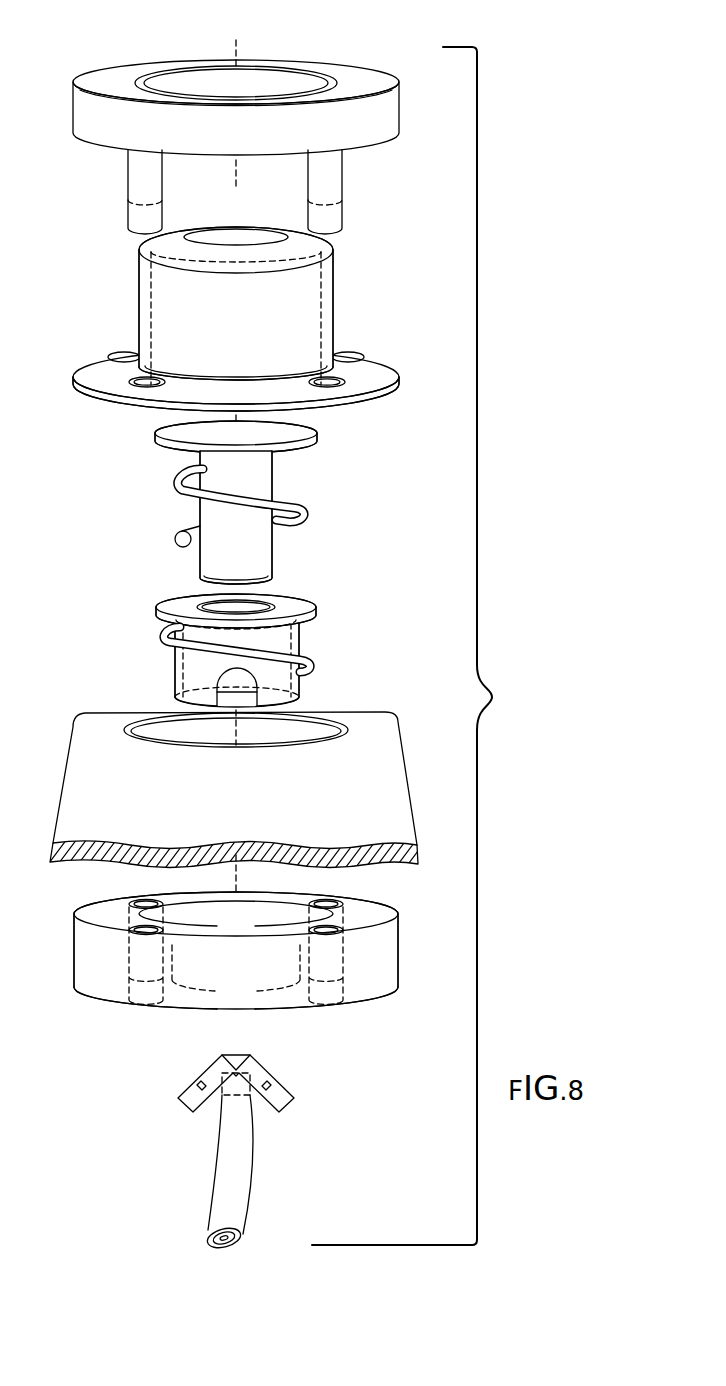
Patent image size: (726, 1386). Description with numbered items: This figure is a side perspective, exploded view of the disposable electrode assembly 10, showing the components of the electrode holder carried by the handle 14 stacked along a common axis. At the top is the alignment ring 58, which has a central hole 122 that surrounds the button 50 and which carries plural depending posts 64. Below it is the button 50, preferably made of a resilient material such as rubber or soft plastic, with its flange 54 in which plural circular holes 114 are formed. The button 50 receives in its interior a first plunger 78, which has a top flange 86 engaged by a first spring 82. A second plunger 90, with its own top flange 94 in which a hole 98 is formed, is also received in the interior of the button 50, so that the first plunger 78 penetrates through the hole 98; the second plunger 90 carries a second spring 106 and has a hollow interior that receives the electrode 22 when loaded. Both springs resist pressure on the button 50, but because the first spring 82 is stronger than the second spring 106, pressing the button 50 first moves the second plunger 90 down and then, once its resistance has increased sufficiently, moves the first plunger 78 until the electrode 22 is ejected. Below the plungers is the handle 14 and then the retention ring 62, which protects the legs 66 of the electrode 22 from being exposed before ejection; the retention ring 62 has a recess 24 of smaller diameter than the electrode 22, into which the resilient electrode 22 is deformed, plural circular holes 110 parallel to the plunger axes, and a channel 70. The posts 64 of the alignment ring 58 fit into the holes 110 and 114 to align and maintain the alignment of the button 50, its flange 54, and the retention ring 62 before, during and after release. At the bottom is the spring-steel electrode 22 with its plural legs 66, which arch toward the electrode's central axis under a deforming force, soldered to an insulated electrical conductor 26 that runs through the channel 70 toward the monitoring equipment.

The disposable electrode assembly 10 is at (493, 697).
The handle 14 is at (141, 809).
The electrode 22 is at (251, 1107).
The recess 24 is at (222, 911).
The electrical conductor 26 is at (238, 1183).
The button 50 is at (302, 308).
The flange 54 is at (236, 370).
The alignment ring 58 is at (219, 81).
The retention ring 62 is at (223, 953).
The depending posts 64 is at (128, 170).
The legs 66 is at (192, 1112).
The channel 70 is at (246, 681).
The first plunger 78 is at (235, 538).
The first spring 82 is at (295, 505).
The top flange 86 is at (293, 455).
The second plunger 90 is at (254, 834).
The top flange 94 is at (245, 598).
The hole 98 is at (220, 605).
The second spring 106 is at (200, 646).
The circular holes 110 is at (133, 927).
The circular holes 114 is at (135, 380).
The central hole 122 is at (283, 78).